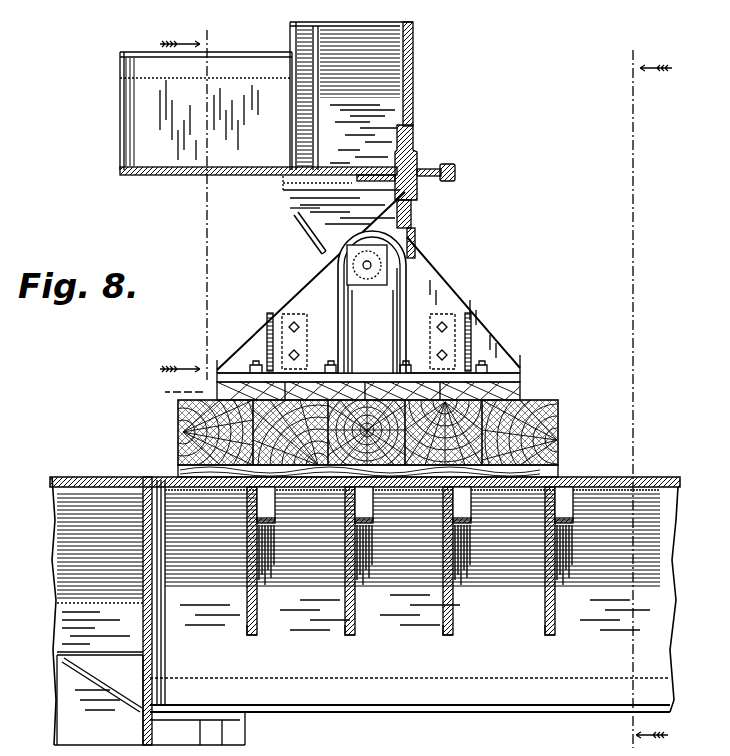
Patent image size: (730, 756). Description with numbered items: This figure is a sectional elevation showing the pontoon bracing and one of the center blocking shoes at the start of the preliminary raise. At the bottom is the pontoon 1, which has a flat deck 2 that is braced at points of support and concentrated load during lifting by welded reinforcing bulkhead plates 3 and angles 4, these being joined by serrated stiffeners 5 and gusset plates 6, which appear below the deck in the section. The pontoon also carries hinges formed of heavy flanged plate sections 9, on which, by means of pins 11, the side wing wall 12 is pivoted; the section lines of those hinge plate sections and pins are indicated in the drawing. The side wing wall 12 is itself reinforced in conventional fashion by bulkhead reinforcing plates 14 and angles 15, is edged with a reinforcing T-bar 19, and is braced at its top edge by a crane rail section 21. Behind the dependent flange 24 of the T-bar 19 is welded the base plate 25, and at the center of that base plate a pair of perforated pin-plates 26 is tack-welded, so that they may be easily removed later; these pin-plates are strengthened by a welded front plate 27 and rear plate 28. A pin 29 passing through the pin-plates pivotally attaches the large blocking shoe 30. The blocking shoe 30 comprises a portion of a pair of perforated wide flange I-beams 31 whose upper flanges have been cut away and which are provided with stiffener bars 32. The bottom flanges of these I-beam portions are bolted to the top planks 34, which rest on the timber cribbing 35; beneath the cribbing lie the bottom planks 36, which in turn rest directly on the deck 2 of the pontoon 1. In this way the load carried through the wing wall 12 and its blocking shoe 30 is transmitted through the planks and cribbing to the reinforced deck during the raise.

The pontoon 1 is at (57, 540).
The flat deck 2 is at (660, 485).
The reinforcing bulkhead plate 3 is at (660, 645).
The angle 4 is at (507, 710).
The serrated stiffener 5 is at (280, 547).
The gusset plate 6 is at (257, 625).
The heavy flanged plate section 9 is at (175, 210).
The pin 11 is at (650, 387).
The side wing wall 12 is at (413, 98).
The bulkhead reinforcing plate 14 is at (317, 180).
The angle 15 is at (243, 62).
The reinforcing T-bar 19 is at (405, 148).
The crane rail section 21 is at (456, 172).
The dependent flange 24 is at (412, 213).
The base plate 25 is at (317, 217).
The perforated pin-plate 26 is at (313, 243).
The front plate 27 is at (414, 248).
The rear plate 28 is at (312, 248).
The pin 29 is at (365, 286).
The blocking shoe 30 is at (487, 345).
The perforated wide flange I-beam 31 is at (503, 365).
The stiffener bar 32 is at (467, 347).
The top plank 34 is at (523, 393).
The timber cribbing 35 is at (563, 417).
The bottom plank 36 is at (550, 470).